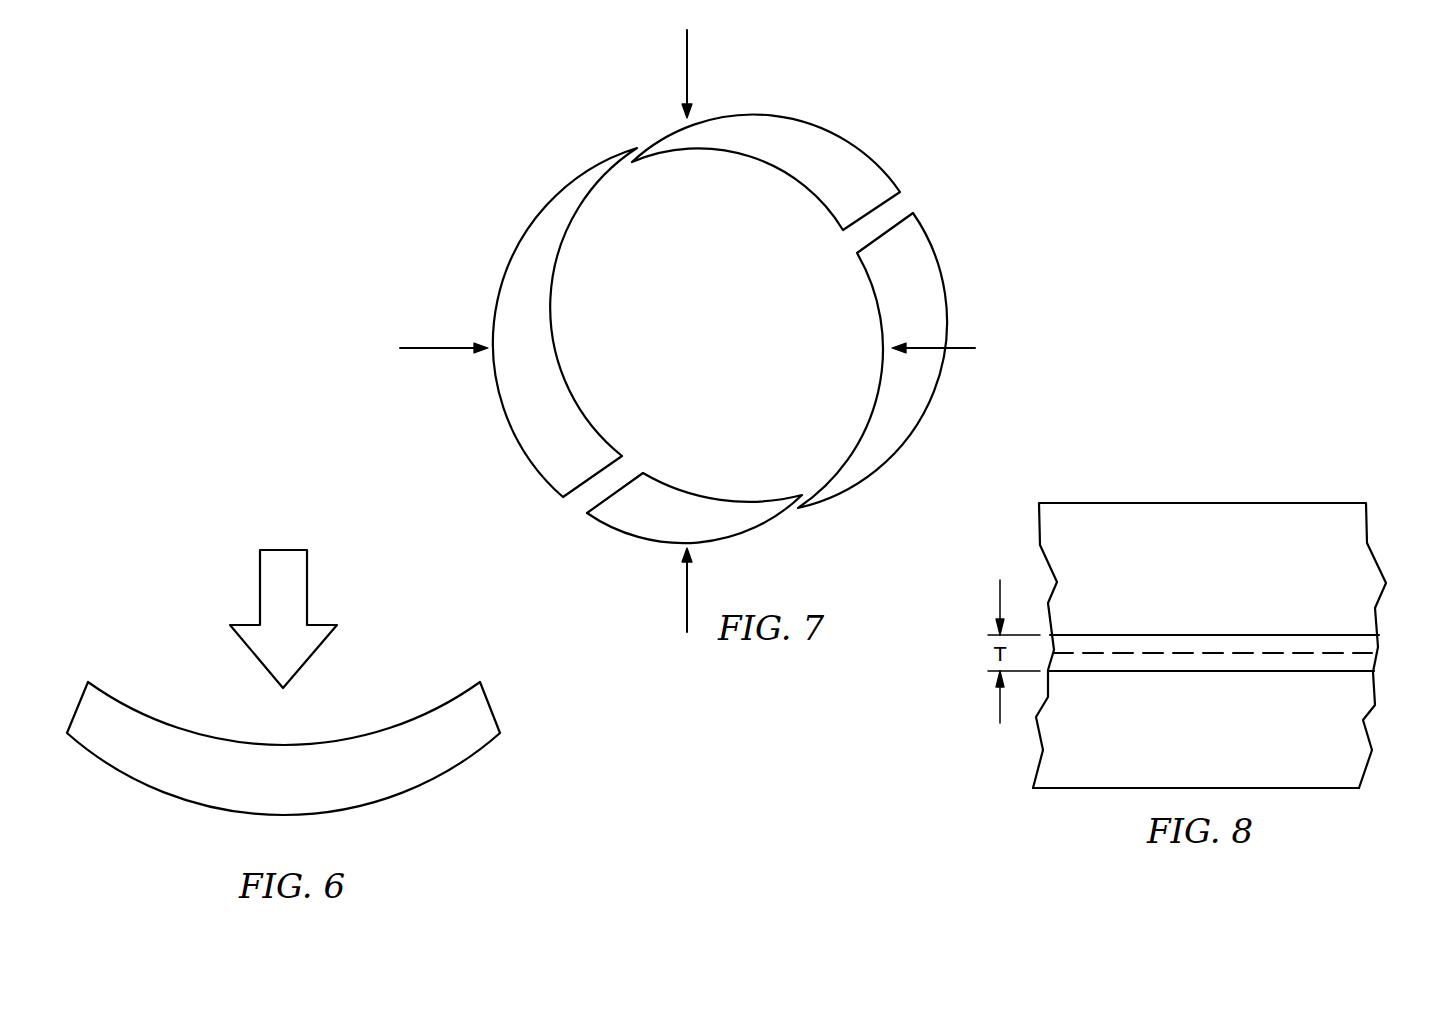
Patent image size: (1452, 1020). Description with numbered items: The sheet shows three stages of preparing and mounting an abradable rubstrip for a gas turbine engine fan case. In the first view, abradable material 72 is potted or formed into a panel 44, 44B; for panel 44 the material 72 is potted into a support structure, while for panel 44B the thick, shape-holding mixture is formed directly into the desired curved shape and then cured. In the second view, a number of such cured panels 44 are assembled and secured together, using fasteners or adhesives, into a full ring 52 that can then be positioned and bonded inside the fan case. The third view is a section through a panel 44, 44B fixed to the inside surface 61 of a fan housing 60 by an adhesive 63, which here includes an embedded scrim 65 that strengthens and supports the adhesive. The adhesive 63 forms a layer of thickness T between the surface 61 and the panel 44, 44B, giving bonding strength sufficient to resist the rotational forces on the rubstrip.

In FIG. 6, the panel 44 is at (283, 770).
In FIG. 7, the panel 44 is at (513, 258).
In FIG. 8, the panel 44 is at (1196, 754).
In FIG. 6, the panel 44B is at (415, 784).
In FIG. 8, the panel 44B is at (1243, 748).
In FIG. 7, the full ring 52 is at (687, 331).
In FIG. 8, the fan housing 60 is at (1223, 522).
In FIG. 8, the inside surface 61 is at (1278, 632).
In FIG. 8, the adhesive 63 is at (1362, 645).
In FIG. 8, the scrim 65 is at (1087, 652).
In FIG. 6, the material 72 is at (308, 575).